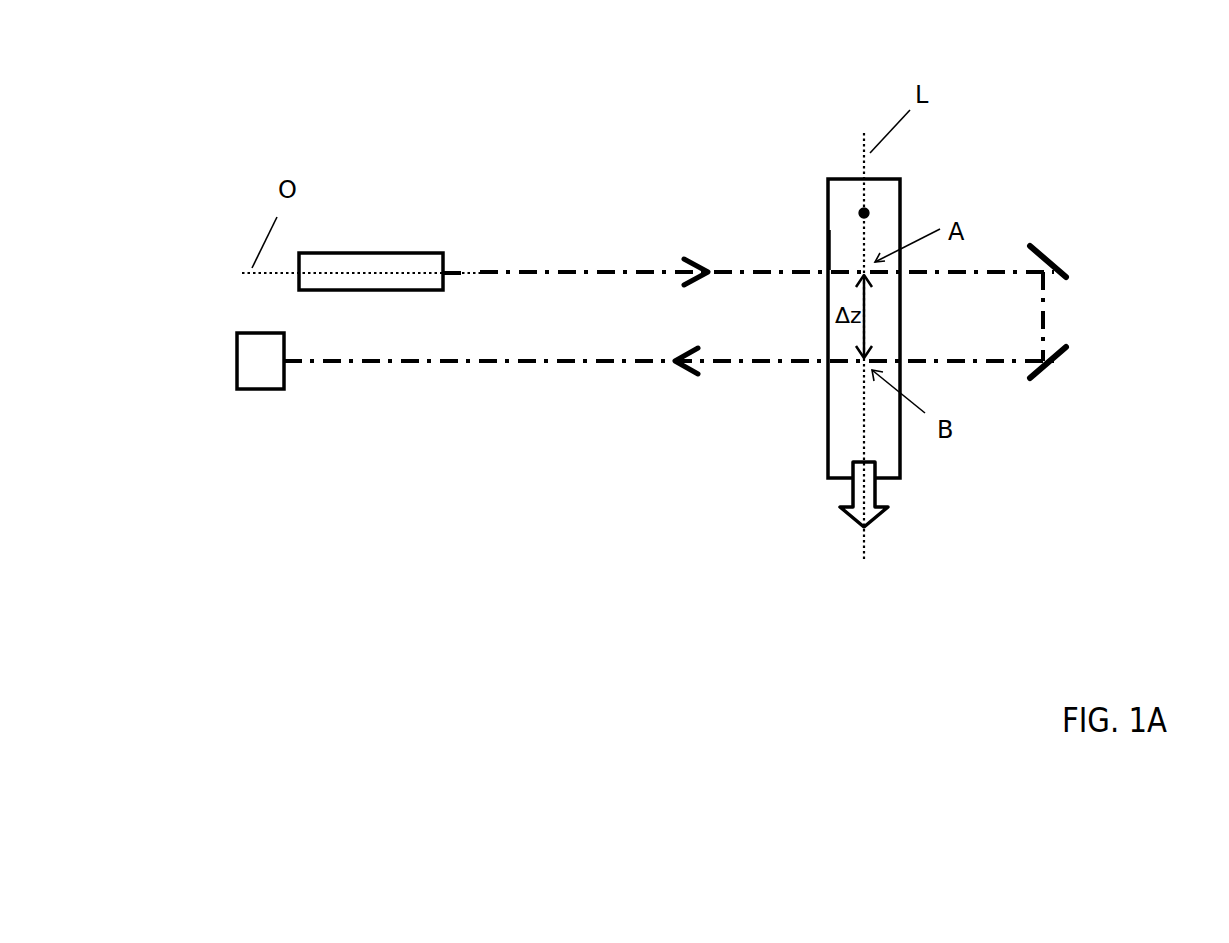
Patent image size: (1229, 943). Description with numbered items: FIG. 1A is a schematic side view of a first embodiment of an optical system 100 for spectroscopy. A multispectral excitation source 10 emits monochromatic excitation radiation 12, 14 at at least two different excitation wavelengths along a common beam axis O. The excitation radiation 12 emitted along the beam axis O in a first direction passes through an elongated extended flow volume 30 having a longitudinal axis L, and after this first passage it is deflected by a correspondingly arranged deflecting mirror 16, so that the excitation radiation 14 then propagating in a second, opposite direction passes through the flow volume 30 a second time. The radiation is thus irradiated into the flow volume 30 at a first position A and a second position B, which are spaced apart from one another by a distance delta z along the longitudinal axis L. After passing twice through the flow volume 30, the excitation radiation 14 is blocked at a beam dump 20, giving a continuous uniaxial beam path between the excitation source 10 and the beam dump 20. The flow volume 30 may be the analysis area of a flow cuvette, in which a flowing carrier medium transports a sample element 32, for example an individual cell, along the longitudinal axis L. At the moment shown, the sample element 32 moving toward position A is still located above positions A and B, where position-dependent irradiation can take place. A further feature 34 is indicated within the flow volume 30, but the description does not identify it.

The optical system 100 is at (625, 142).
The multispectral excitation source 10 is at (343, 247).
The excitation radiation 12 is at (553, 262).
The excitation radiation 14 is at (600, 378).
The deflecting mirror 16 is at (1068, 278).
The beam dump 20 is at (250, 402).
The flow volume 30 is at (817, 175).
The sample element 32 is at (850, 208).
The surface of optical element 34 is at (851, 250).